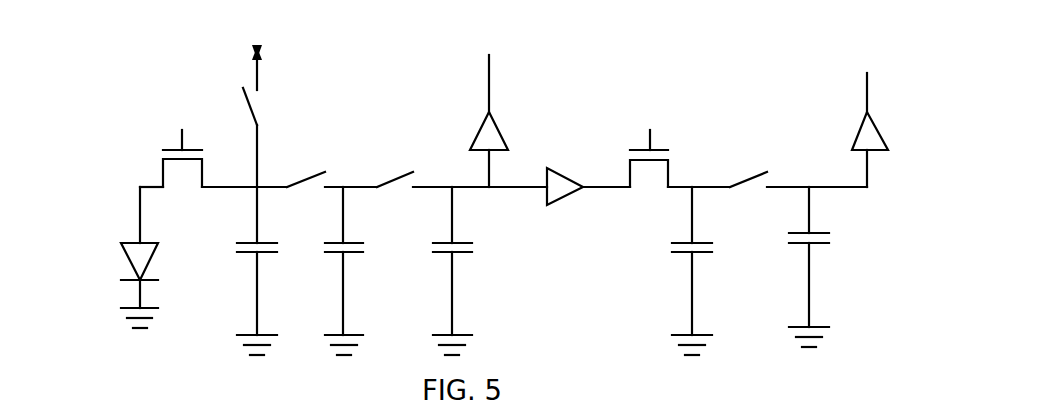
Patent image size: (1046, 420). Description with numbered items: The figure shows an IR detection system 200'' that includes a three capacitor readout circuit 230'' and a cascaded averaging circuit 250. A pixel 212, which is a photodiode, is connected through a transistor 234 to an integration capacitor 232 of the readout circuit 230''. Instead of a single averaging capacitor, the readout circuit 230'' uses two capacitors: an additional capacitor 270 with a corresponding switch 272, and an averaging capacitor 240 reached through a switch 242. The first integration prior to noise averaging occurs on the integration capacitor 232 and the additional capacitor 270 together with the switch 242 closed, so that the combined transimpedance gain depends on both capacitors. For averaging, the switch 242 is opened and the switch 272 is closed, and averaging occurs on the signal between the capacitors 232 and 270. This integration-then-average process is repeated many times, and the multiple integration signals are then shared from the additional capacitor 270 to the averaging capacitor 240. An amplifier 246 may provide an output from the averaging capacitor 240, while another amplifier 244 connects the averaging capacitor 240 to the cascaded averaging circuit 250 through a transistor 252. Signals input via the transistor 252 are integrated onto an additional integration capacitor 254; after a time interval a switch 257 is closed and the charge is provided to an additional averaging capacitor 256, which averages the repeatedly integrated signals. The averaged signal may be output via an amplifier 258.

The IR detection system 200'' is at (462, 183).
The pixel 212 is at (106, 262).
The transistor 234 is at (133, 170).
The readout circuit 230'' is at (183, 135).
The integration capacitor 232 is at (230, 251).
The switch 242 is at (312, 195).
The additional capacitor 270 is at (364, 268).
The switch 272 is at (418, 195).
The averaging capacitor 240 is at (480, 268).
The amplifier 246 is at (463, 140).
The amplifier 244 is at (544, 229).
The cascaded averaging circuit 250 is at (674, 63).
The transistor 252 is at (645, 126).
The additional integration capacitor 254 is at (722, 244).
The switch 257 is at (755, 153).
The additional averaging capacitor 256 is at (837, 259).
The amplifier 258 is at (826, 130).